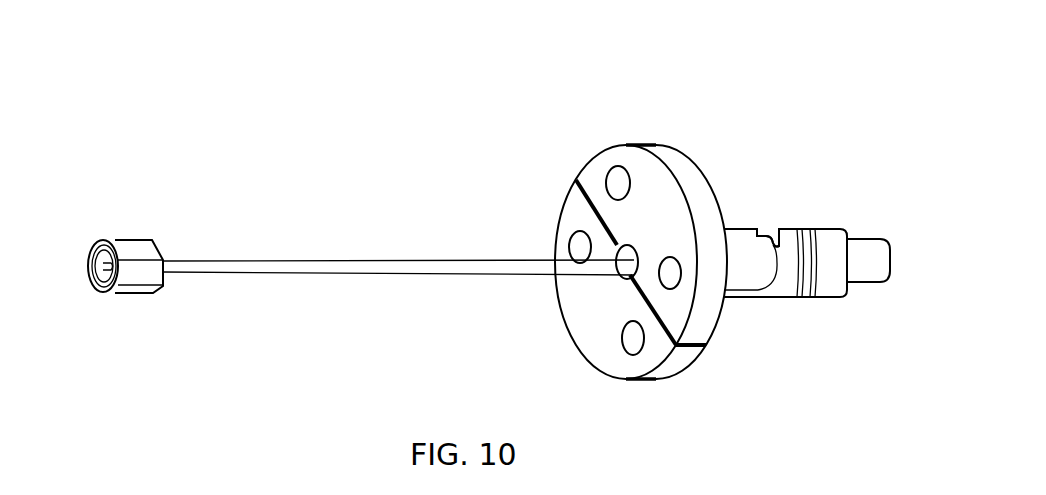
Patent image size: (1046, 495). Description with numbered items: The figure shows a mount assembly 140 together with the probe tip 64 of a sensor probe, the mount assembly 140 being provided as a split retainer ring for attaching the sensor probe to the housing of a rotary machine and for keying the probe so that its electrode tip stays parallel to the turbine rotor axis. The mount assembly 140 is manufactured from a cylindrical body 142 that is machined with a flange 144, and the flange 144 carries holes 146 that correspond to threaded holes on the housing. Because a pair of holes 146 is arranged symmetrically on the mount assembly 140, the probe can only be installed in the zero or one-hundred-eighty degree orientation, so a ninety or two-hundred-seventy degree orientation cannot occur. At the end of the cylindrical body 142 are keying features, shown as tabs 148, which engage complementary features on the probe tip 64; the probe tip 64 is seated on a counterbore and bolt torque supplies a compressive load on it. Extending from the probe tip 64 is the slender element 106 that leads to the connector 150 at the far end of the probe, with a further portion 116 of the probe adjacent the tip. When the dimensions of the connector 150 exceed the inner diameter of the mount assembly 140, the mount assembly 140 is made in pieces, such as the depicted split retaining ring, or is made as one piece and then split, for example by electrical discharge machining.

The mount assembly 140 is at (707, 103).
The cylindrical body 142 is at (740, 229).
The flange 144 is at (702, 328).
The holes 146 is at (580, 247).
The tabs 148 is at (777, 252).
The pin 116 is at (866, 283).
The probe tip 64 is at (886, 224).
The rod 106 is at (349, 261).
The connector 150 is at (130, 309).